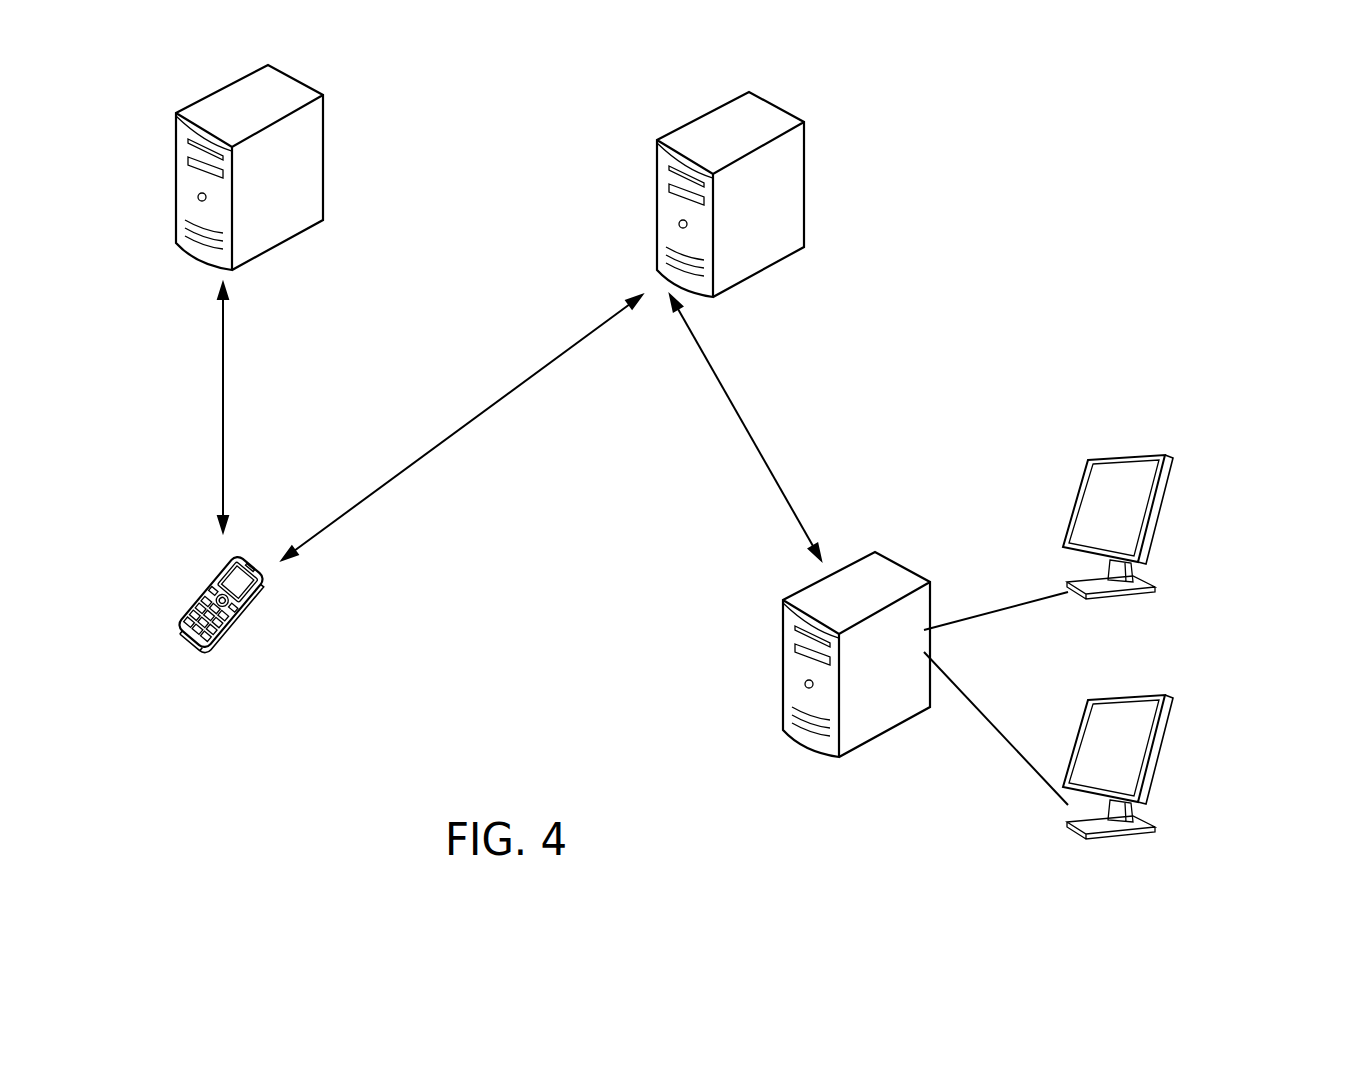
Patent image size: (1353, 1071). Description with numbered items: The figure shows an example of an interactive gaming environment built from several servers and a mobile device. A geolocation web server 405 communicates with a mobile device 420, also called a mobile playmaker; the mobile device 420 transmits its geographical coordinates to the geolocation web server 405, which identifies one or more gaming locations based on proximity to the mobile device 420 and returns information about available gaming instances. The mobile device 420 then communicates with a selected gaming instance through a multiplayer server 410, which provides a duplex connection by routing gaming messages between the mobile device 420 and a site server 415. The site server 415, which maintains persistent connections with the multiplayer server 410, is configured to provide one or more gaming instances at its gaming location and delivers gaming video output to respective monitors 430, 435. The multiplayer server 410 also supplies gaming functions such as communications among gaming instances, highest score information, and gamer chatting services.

The geolocation web server 405 is at (326, 161).
The multiplayer server 410 is at (802, 189).
The site server 415 is at (873, 662).
The mobile device 420 is at (192, 598).
The monitor 430 is at (1176, 527).
The monitor 435 is at (1180, 767).